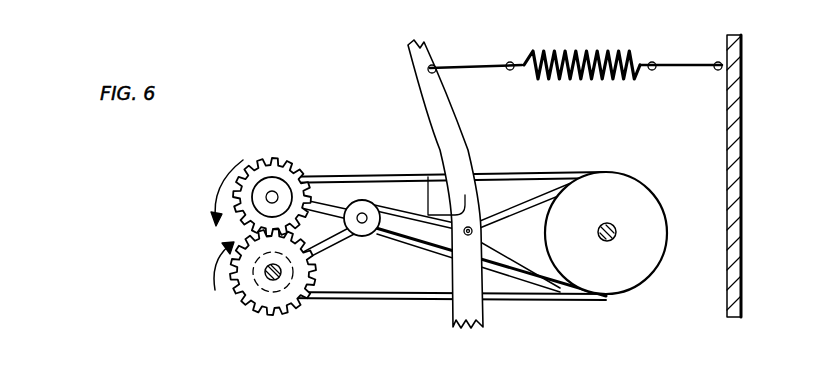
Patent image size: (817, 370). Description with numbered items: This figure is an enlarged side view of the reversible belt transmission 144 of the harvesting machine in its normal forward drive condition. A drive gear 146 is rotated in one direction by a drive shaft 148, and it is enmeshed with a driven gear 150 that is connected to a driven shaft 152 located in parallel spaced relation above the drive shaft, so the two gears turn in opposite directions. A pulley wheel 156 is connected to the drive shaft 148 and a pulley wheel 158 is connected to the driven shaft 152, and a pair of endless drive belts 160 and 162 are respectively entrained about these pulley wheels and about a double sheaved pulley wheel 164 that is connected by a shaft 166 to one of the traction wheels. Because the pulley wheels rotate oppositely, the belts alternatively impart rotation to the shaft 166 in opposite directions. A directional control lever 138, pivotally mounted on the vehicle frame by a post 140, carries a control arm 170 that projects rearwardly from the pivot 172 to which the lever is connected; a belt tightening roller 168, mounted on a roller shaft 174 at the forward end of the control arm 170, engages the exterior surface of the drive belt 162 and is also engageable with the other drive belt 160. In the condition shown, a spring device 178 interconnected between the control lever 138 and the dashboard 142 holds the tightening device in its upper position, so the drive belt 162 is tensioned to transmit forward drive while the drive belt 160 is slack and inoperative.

The directional control lever 138 is at (425, 72).
The post 140 is at (462, 307).
The dashboard 142 is at (736, 156).
The belt transmission 144 is at (368, 126).
The drive gear 146 is at (262, 302).
The drive shaft 148 is at (268, 276).
The driven gear 150 is at (263, 160).
The driven shaft 152 is at (277, 190).
The pulley wheel 156 is at (330, 286).
The pulley wheel 158 is at (258, 196).
The drive belt 160 is at (514, 298).
The drive belt 162 is at (507, 176).
The double sheaved pulley wheel 164 is at (628, 195).
The shaft 166 is at (608, 242).
The belt tightening roller 168 is at (366, 210).
The control arm 170 is at (398, 238).
The pivot 172 is at (474, 231).
The roller shaft 174 is at (364, 232).
The spring device 178 is at (592, 50).